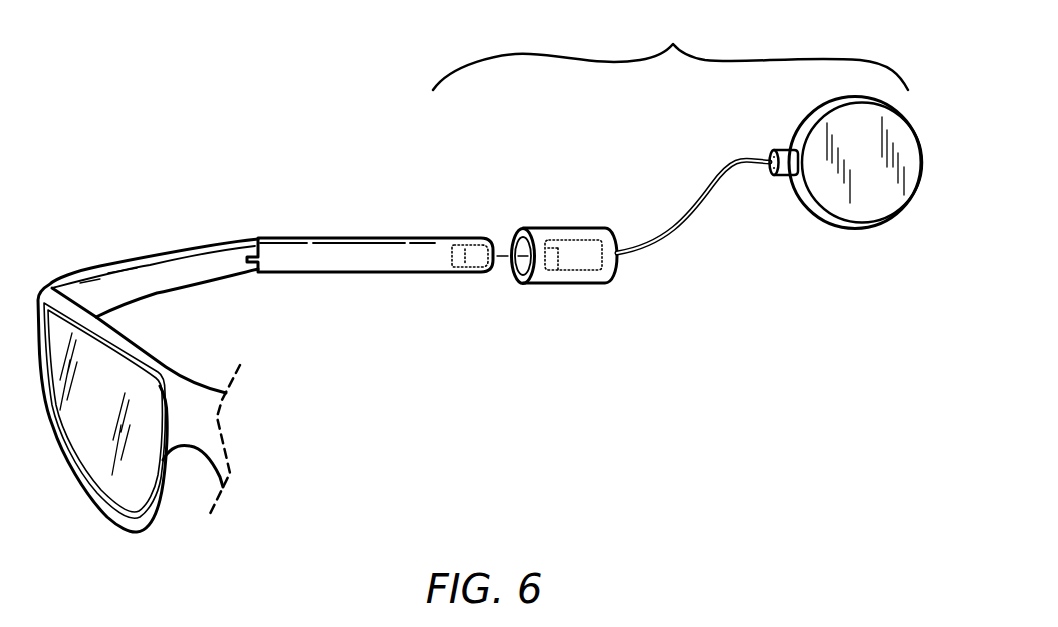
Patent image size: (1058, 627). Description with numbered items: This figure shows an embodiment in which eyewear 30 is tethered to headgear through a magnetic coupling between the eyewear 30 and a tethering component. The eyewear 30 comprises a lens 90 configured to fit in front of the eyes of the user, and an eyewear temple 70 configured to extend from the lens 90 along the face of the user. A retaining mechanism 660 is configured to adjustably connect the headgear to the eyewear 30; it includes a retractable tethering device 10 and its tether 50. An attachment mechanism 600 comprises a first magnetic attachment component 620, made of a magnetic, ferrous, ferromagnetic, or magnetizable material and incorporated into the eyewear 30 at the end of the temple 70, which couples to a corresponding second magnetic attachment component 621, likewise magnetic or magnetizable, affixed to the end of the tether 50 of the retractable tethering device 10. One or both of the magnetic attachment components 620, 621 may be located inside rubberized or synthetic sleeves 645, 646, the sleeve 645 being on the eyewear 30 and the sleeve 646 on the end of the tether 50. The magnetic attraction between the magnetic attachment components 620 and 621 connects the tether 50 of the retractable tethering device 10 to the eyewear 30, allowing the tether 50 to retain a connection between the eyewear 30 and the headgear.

The retractable tethering device 10 is at (873, 227).
The eyewear 30 is at (278, 528).
The tether 50 is at (708, 182).
The eyewear temple 70 is at (221, 240).
The lens 90 is at (93, 538).
The attachment mechanism 600 is at (511, 306).
The first magnetic attachment component 620 is at (469, 265).
The second magnetic attachment component 621 is at (584, 270).
The sleeve 645 is at (478, 239).
The sleeve 646 is at (566, 228).
The retaining mechanism 660 is at (670, 56).